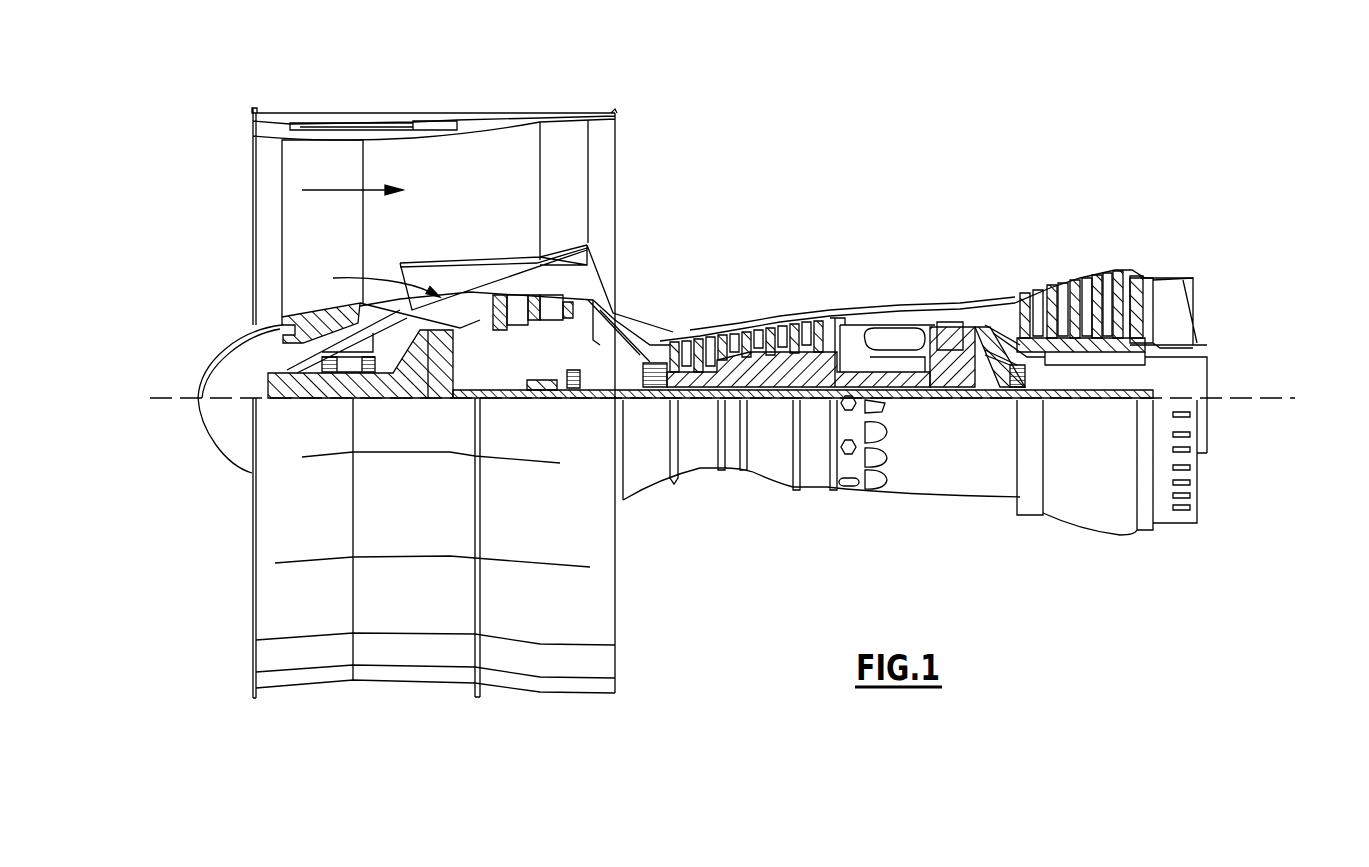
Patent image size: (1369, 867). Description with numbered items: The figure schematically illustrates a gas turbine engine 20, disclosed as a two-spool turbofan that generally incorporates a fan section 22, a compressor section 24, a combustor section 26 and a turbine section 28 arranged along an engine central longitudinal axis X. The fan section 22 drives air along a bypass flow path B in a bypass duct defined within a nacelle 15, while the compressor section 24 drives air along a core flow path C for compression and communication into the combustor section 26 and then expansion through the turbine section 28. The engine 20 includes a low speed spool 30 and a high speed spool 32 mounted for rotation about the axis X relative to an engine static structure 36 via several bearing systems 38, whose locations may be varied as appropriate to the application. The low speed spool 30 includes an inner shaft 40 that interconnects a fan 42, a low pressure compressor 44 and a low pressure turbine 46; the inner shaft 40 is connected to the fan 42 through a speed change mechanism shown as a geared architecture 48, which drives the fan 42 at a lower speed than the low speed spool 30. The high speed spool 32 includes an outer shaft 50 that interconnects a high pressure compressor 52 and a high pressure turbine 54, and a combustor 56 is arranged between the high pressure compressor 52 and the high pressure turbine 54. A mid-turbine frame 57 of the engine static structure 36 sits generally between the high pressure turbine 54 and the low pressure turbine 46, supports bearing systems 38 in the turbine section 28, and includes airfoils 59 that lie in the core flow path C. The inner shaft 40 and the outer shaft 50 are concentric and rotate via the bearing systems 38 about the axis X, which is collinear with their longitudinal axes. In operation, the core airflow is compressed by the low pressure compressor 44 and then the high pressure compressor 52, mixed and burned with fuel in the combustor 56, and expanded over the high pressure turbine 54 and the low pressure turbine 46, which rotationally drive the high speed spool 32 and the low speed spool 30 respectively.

The gas turbine engine 20 is at (900, 162).
The fan section 22 is at (360, 106).
The nacelle 15 is at (433, 133).
The fan 42 is at (338, 244).
The low pressure compressor 44 is at (528, 302).
The compressor section 24 is at (837, 320).
The high pressure compressor 52 is at (752, 380).
The high speed spool 32 is at (818, 352).
The combustor section 26 is at (920, 311).
The combustor 56 is at (890, 338).
The high pressure turbine 54 is at (947, 318).
The mid-turbine frame 57 is at (1000, 303).
The turbine section 28 is at (1089, 292).
The low pressure turbine 46 is at (1082, 297).
The airfoils 59 is at (995, 335).
The outer shaft 50 is at (895, 385).
The bearing systems 38 is at (572, 392).
The geared architecture 48 is at (440, 384).
The inner shaft 40 is at (637, 400).
The low speed spool 30 is at (773, 418).
The engine static structure 36 is at (812, 500).
The bypass flow path B is at (340, 188).
The core flow path C is at (377, 281).
The engine central longitudinal axis X is at (1290, 398).